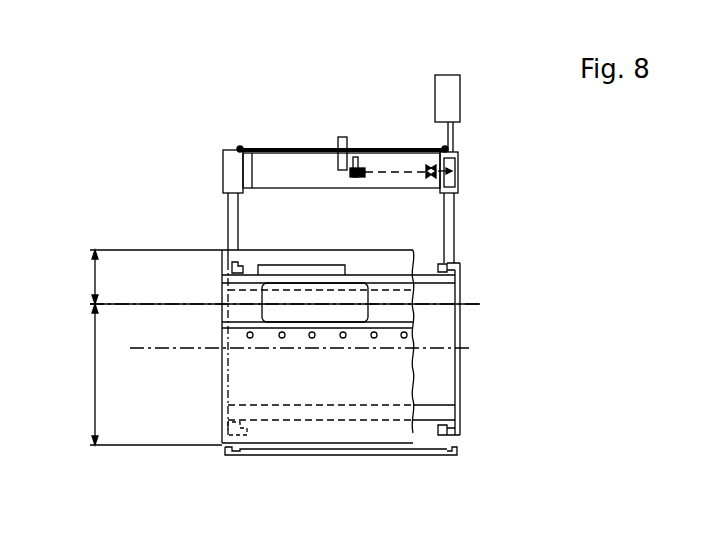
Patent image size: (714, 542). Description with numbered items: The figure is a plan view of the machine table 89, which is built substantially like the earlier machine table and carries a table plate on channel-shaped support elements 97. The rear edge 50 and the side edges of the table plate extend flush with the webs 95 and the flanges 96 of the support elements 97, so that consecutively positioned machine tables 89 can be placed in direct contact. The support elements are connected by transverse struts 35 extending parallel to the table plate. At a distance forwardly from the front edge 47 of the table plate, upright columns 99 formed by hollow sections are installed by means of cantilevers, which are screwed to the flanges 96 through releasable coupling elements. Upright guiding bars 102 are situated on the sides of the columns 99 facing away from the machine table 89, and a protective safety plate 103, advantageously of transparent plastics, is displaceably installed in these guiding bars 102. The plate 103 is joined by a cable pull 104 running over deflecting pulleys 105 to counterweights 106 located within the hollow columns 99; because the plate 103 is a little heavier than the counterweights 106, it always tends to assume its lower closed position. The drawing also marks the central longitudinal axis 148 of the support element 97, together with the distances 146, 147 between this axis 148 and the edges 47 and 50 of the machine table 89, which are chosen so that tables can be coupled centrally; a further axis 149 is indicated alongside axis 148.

The transverse struts 35 is at (428, 283).
The front edge 47 is at (350, 250).
The rear edge 50 is at (262, 445).
The machine table 89 is at (212, 398).
The webs 95 is at (462, 333).
The flanges 96 is at (440, 265).
The channel-shaped support elements 97 is at (215, 320).
The upright columns 99 is at (457, 185).
The upright guiding bars 102 is at (240, 148).
The protective safety plate 103 is at (290, 146).
The cable pull 104 is at (392, 172).
The deflecting pulleys 105 is at (350, 172).
The counterweights 106 is at (457, 162).
The distance 146 is at (93, 280).
The distance 147 is at (93, 373).
The central longitudinal axis 148 is at (133, 306).
The center line 149 is at (155, 350).